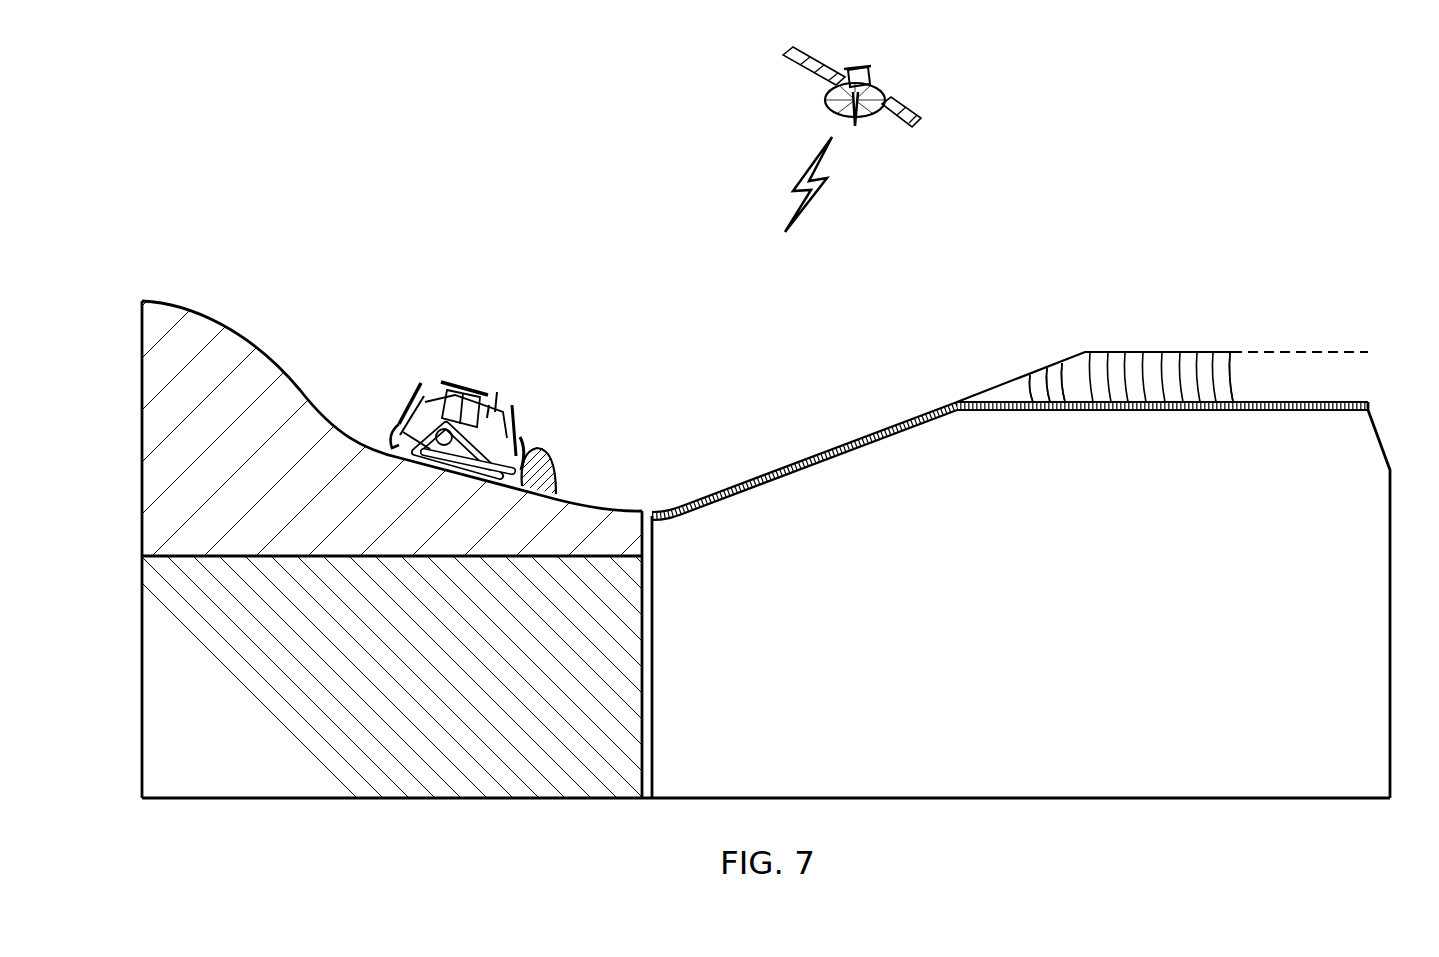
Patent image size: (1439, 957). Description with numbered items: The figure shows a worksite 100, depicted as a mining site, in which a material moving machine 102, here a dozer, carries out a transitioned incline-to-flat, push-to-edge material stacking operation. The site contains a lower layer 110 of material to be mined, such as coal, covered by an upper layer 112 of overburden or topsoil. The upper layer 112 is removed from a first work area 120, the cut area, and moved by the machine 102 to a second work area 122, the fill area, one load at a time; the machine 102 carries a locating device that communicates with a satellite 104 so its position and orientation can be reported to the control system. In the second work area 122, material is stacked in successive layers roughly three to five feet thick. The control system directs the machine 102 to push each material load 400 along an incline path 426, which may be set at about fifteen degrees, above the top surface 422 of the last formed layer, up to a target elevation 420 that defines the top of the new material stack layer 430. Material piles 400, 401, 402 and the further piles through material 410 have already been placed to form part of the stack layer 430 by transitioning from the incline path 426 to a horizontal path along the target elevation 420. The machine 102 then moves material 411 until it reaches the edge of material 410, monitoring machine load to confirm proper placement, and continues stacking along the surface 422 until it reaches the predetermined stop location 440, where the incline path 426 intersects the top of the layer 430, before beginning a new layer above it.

The worksite 100 is at (1265, 212).
The material moving machine 102 is at (491, 368).
The satellite 104 is at (875, 79).
The lower layer 110 is at (162, 664).
The upper layer 112 is at (133, 302).
The first work area 120 is at (642, 268).
The second work area 122 is at (652, 268).
The material load 400 is at (1007, 390).
The material pile 401 is at (1047, 383).
The material pile 402 is at (1077, 382).
The material pile 410 is at (1223, 387).
The material pile 411 is at (545, 447).
The target elevation 420 is at (1169, 344).
The top surface 422 is at (1299, 401).
The incline path 426 is at (821, 443).
The material stack layer 430 is at (1378, 352).
The transition point 440 is at (1374, 342).